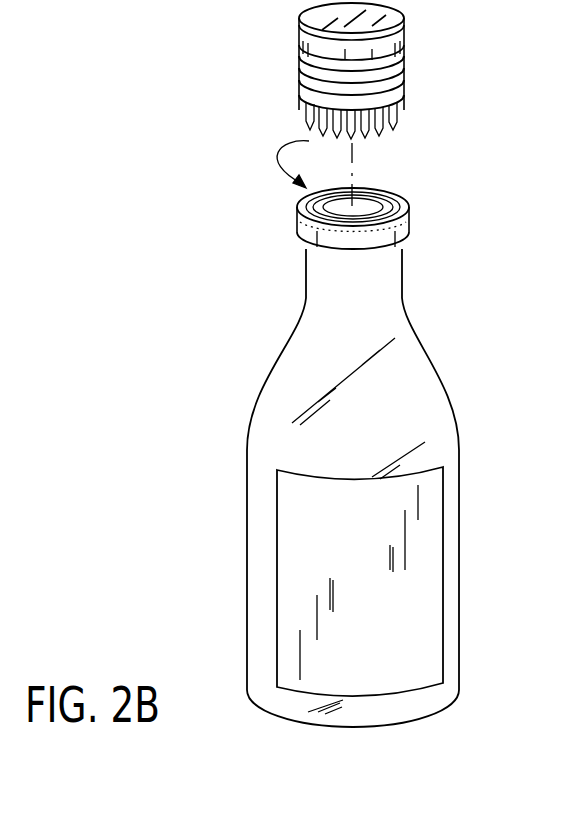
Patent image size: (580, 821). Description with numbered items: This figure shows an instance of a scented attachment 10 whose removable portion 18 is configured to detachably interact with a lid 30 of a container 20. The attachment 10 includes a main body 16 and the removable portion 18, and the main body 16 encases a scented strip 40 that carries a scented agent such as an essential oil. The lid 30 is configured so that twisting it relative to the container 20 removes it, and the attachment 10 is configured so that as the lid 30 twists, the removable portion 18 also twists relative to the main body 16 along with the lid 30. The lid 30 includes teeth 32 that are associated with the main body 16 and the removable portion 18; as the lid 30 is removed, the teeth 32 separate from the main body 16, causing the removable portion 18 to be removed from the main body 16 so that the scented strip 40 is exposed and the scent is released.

The scented attachment 10 is at (408, 221).
The main body 16 is at (298, 215).
The removable portion 18 is at (407, 105).
The container 20 is at (460, 558).
The lid 30 is at (298, 44).
The teeth 32 is at (356, 137).
The scented strip 40 is at (399, 197).